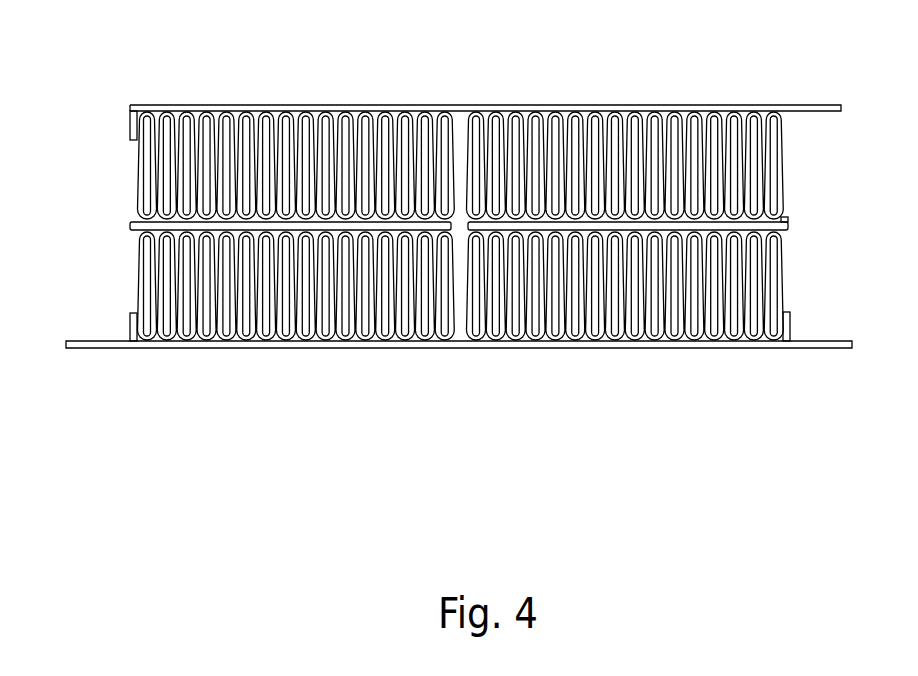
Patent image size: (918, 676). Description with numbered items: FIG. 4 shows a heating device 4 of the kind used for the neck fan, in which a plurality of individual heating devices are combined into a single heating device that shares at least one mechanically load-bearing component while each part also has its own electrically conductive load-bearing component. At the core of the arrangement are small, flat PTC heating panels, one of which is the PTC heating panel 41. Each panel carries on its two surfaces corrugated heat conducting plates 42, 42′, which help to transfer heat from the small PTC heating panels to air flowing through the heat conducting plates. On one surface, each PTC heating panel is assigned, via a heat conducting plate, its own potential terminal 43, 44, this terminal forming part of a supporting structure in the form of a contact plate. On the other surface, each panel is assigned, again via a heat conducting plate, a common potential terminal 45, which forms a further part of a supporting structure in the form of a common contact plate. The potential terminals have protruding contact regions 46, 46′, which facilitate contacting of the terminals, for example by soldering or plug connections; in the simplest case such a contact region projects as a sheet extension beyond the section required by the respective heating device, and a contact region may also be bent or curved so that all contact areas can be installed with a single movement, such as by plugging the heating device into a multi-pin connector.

The heating device 4 is at (788, 226).
The PTC heating panel 41 is at (133, 226).
The corrugated heat conducting plate 42 is at (447, 140).
The corrugated heat conducting plate 42′ is at (471, 140).
The potential terminal 43 is at (106, 348).
The potential terminal 44 is at (808, 348).
The common potential terminal 45 is at (651, 105).
The protruding contact region 46 is at (806, 105).
The protruding contact region 46′ is at (854, 341).